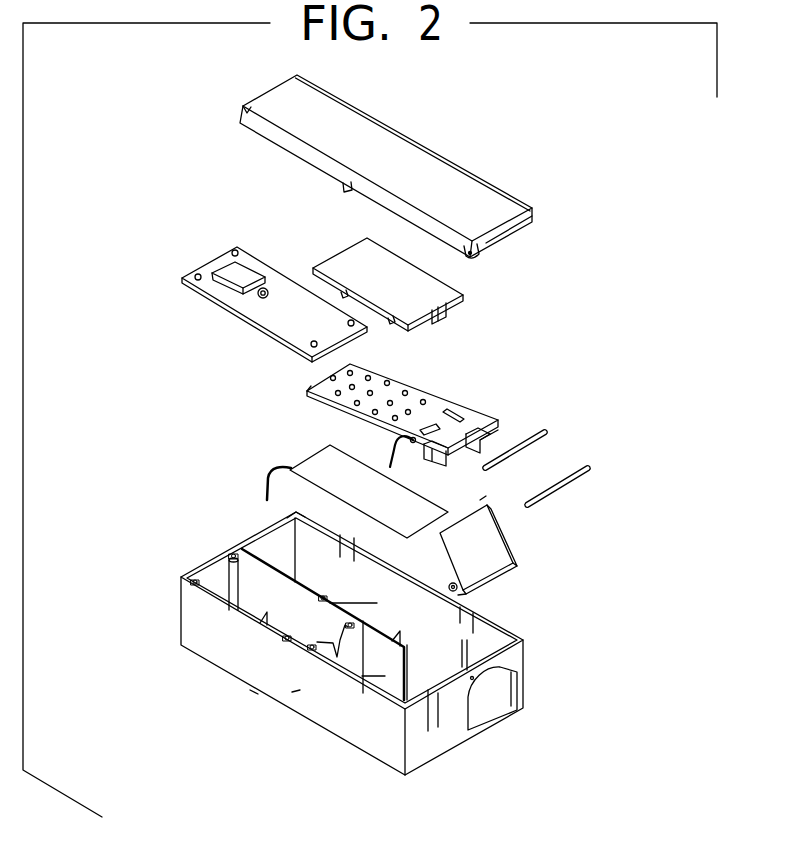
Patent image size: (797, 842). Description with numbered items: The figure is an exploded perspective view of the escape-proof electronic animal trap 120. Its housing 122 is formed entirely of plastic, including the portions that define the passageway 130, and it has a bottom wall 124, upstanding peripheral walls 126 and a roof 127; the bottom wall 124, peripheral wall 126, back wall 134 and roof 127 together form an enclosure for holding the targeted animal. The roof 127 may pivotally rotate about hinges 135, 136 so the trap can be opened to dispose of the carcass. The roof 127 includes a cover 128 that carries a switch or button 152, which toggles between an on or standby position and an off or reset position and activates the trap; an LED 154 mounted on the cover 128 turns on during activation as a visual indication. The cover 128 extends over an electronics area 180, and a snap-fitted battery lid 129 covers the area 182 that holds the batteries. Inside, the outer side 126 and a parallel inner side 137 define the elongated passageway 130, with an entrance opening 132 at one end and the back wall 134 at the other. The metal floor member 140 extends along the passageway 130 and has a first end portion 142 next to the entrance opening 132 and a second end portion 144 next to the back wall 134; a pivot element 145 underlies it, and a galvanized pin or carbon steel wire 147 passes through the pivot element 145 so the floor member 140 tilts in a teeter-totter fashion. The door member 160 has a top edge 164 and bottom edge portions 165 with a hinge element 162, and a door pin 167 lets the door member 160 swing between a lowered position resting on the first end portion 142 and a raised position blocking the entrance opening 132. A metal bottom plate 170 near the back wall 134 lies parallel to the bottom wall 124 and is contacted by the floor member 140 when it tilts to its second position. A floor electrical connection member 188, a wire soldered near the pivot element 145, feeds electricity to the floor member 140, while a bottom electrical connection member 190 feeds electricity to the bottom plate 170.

The electronic animal trap 120 is at (643, 320).
The housing 122 is at (162, 656).
The bottom wall 124 is at (250, 690).
The peripheral walls 126 is at (298, 692).
The roof 127 is at (420, 132).
The cover 128 is at (208, 266).
The battery lid 129 is at (461, 300).
The passageway 130 is at (316, 558).
The entrance opening 132 is at (494, 716).
The back wall 134 is at (266, 528).
The hinge 135 is at (242, 112).
The hinge 136 is at (473, 257).
The inner side 137 is at (330, 603).
The floor member 140 is at (395, 383).
The first end portion 142 is at (478, 422).
The second end portion 144 is at (306, 372).
The pivot element 145 is at (410, 448).
The floor galvanized pin or carbon steel wire 147 is at (548, 436).
The switch or button 152 is at (247, 273).
The LED 154 is at (259, 298).
The door member 160 is at (494, 547).
The hinge element 162 is at (462, 598).
The top edge 164 is at (480, 497).
The bottom edge portions 165 is at (478, 582).
The door galvanized pin or carbon steel wire 167 is at (572, 481).
The bottom plate 170 is at (393, 502).
The electronics area 180 is at (259, 603).
The power supply area 182 is at (362, 676).
The floor electrical connection member 188 is at (390, 450).
The bottom electrical connection member 190 is at (270, 478).